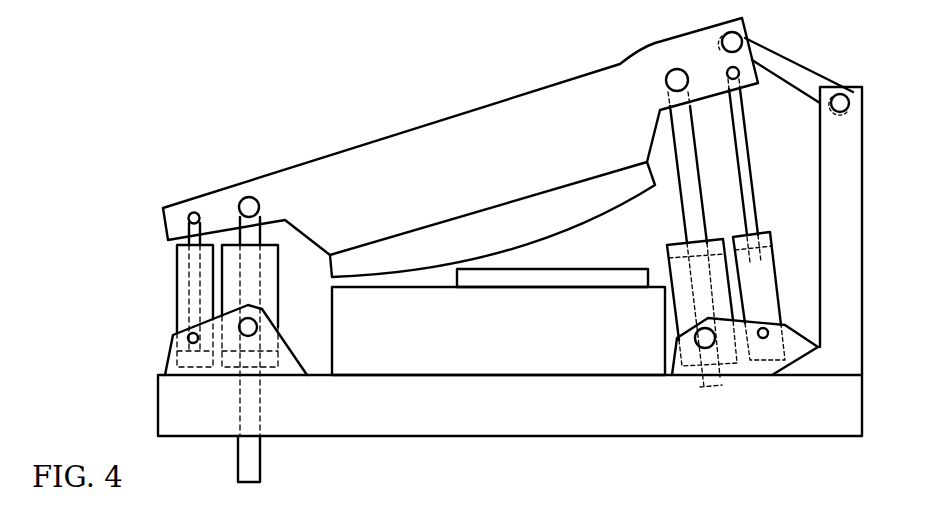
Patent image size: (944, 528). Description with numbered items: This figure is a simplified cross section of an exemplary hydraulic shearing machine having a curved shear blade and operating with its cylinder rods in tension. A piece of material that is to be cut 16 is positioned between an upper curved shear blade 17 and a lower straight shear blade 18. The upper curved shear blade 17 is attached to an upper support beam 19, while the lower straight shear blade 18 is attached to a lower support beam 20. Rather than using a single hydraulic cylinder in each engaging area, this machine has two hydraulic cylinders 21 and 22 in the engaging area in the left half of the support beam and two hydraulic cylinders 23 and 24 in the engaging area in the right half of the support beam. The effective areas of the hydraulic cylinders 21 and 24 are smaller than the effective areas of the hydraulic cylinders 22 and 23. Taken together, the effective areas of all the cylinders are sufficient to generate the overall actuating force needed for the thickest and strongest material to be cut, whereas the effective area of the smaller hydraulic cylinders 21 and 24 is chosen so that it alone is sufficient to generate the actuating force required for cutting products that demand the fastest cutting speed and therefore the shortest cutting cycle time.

The piece of material to be cut 16 is at (556, 280).
The upper curved shear blade 17 is at (470, 212).
The lower straight shear blade 18 is at (462, 365).
The upper support beam 19 is at (456, 122).
The lower support beam 20 is at (519, 430).
The hydraulic cylinder 21 is at (177, 297).
The hydraulic cylinder 22 is at (268, 302).
The hydraulic cylinder 23 is at (678, 277).
The hydraulic cylinder 24 is at (765, 270).